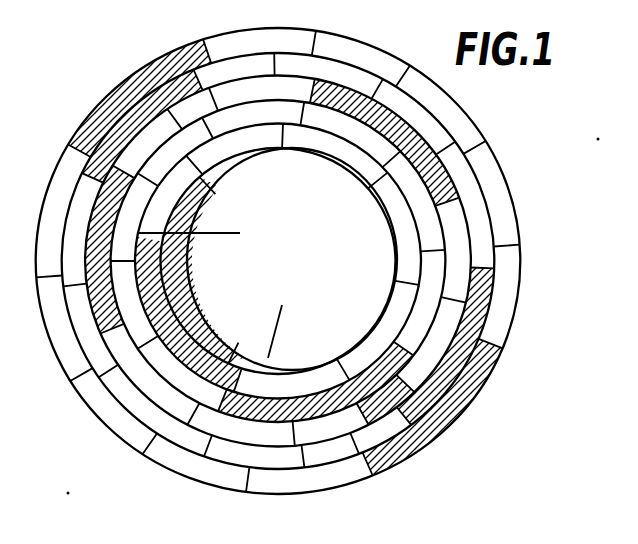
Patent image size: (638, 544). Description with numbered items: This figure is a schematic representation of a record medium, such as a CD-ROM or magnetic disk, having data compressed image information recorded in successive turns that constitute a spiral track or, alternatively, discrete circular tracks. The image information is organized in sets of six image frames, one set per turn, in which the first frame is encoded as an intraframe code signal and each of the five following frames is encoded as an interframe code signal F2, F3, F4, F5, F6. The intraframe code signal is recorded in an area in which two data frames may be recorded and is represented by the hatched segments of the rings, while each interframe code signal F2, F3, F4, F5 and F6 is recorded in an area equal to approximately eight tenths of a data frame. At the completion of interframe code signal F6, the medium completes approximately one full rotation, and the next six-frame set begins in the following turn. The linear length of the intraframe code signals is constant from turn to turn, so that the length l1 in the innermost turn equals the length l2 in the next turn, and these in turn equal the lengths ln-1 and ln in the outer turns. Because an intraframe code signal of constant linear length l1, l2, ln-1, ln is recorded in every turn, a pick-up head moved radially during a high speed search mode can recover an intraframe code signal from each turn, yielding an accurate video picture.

The interframe code signal F2 is at (300, 260).
The interframe code signal F3 is at (281, 260).
The interframe code signal F4 is at (280, 246).
The interframe code signal F5 is at (278, 272).
The interframe code signal F6 is at (277, 240).
The linear length of intraframe code signal ln-1 is at (185, 10).
The linear length of intraframe code signal ln is at (519, 377).
The linear length of intraframe code signal l1 is at (271, 308).
The linear length of intraframe code signal l2 is at (229, 234).